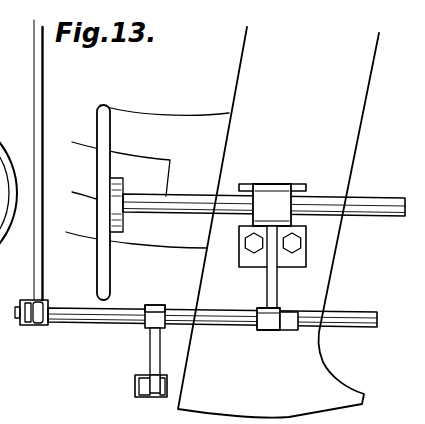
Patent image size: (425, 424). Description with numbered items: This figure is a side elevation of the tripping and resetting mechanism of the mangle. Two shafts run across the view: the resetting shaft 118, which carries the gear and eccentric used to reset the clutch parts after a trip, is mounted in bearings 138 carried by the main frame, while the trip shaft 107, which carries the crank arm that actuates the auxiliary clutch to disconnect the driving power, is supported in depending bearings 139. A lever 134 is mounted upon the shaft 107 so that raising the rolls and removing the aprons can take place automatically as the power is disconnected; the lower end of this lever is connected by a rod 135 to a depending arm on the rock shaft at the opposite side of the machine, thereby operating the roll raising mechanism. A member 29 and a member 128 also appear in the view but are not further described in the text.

The panel 29 is at (222, 222).
The lever 128 is at (92, 86).
The shaft 118 is at (385, 198).
The bearings 138 is at (307, 183).
The shaft 107 is at (369, 310).
The lever 134 is at (158, 338).
The rod 135 is at (158, 362).
The depending bearings 139 is at (273, 331).